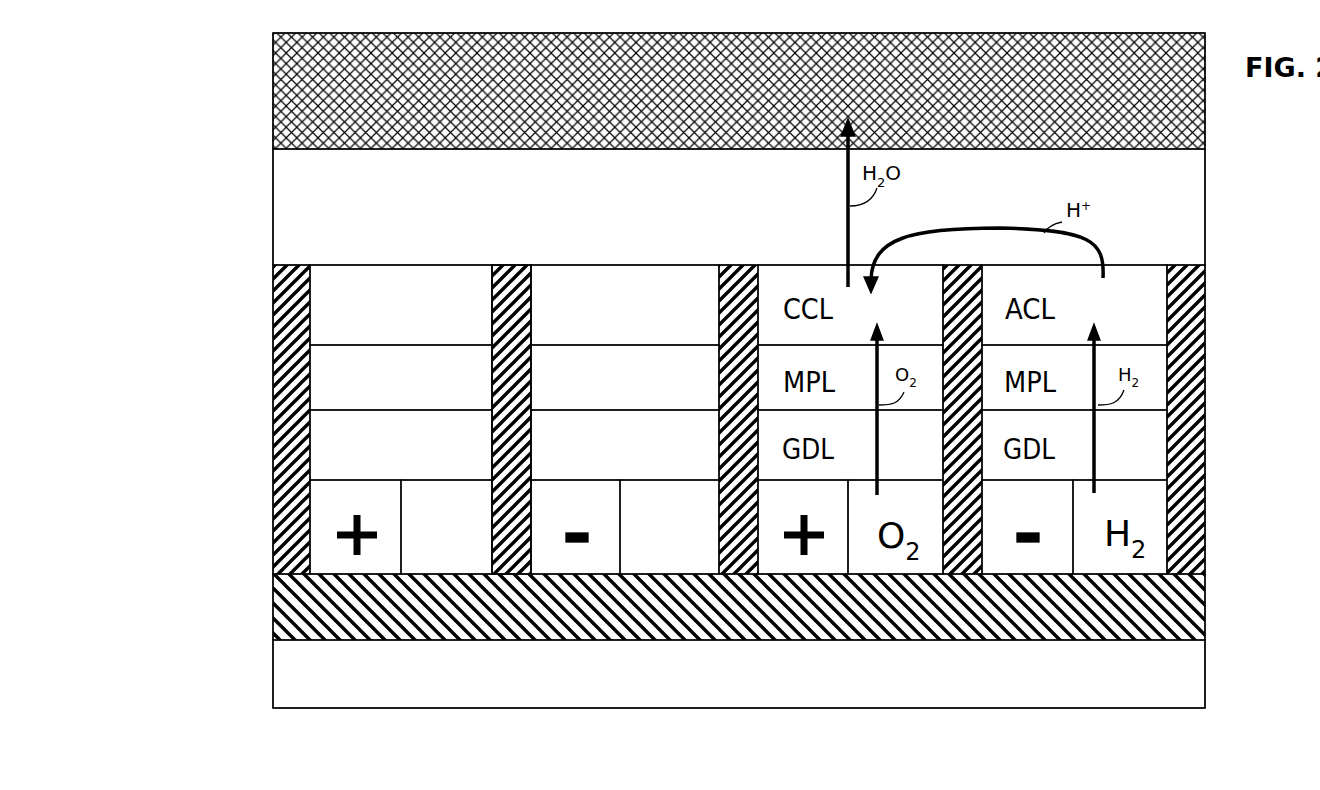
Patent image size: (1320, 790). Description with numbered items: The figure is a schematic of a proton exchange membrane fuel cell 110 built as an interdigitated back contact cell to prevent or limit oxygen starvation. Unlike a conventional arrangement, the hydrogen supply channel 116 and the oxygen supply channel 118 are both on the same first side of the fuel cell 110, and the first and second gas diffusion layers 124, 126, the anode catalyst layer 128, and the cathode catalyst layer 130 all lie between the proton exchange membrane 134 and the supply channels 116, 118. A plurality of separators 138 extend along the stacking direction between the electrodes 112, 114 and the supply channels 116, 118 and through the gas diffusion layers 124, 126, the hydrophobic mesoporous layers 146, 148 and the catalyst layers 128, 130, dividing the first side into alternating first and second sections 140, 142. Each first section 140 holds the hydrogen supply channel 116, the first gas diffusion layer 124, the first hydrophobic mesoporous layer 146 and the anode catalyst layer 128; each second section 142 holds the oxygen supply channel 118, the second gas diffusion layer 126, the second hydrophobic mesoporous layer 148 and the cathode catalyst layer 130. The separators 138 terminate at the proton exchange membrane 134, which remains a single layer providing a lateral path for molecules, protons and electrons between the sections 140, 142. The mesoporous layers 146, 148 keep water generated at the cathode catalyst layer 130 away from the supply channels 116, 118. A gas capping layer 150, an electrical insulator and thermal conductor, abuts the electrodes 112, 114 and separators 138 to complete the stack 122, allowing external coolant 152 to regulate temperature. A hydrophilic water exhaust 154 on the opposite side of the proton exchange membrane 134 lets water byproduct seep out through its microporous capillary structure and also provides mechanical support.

The fuel cell 110 is at (72, 162).
The electrode 112 is at (575, 574).
The electrode 114 is at (340, 574).
The hydrogen supply channel 116 is at (672, 574).
The oxygen supply channel 118 is at (437, 574).
The fuel cell stack 122 is at (1230, 148).
The first gas diffusion layer 124 is at (679, 411).
The second gas diffusion layer 126 is at (310, 440).
The anode catalyst layer 128 is at (570, 264).
The cathode catalyst layer 130 is at (273, 292).
The proton exchange membrane 134 is at (273, 215).
The separator 138 is at (273, 520).
The first section 140 is at (535, 263).
The second section 142 is at (312, 256).
The first hydrophobic mesoporous layer 146 is at (628, 345).
The second hydrophobic mesoporous layer 148 is at (310, 375).
The gas capping layer 150 is at (273, 608).
The coolant 152 is at (273, 675).
The hydrophilic water exhaust 154 is at (273, 98).